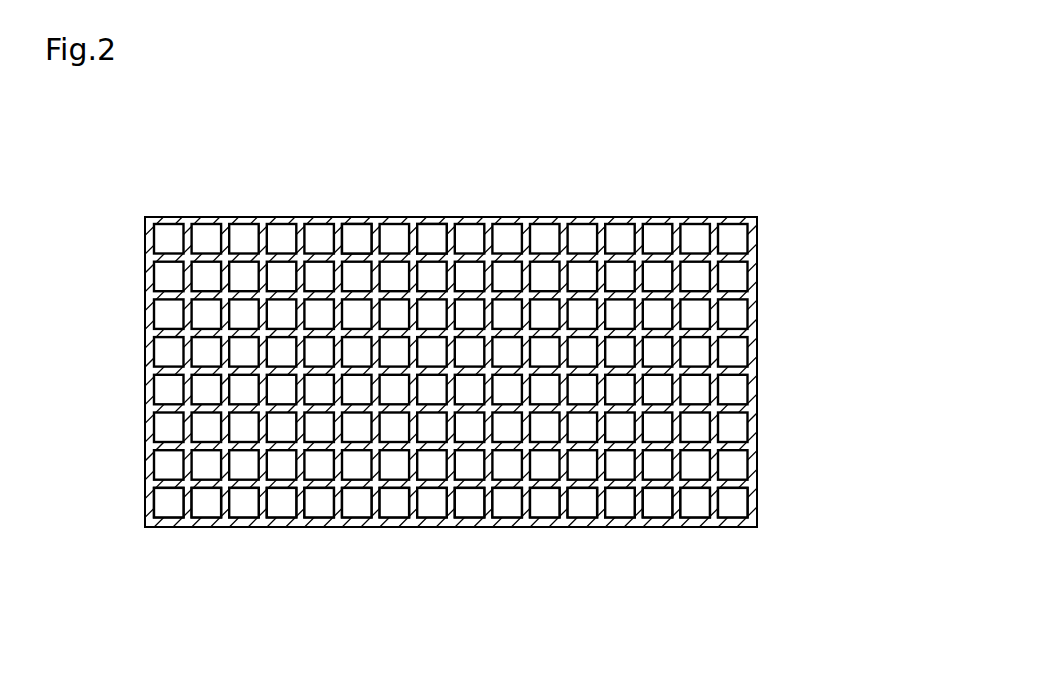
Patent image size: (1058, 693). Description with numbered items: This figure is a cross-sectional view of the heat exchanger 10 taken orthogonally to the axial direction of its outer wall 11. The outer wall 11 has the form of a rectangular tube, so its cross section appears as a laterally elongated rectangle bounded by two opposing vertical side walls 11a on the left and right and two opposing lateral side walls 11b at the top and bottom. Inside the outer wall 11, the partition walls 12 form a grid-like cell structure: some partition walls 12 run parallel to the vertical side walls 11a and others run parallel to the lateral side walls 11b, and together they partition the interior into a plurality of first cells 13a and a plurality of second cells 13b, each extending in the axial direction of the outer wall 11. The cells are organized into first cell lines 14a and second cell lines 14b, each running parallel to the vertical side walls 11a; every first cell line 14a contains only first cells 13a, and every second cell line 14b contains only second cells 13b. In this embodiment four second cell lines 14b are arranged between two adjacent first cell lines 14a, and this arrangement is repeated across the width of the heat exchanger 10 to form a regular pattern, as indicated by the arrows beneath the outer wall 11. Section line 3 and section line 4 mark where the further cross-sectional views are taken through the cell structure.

The heat exchanger 10 is at (624, 142).
The outer wall 11 is at (757, 343).
The vertical side walls 11a is at (145, 453).
The lateral side walls 11b is at (698, 217).
The partition walls 12 is at (510, 242).
The first cells 13a is at (360, 240).
The second cells 13b is at (432, 240).
The first cell lines 14a is at (176, 550).
The second cell lines 14b is at (309, 538).
The line 3- 3 is at (358, 165).
The line 4- 4 is at (393, 138).